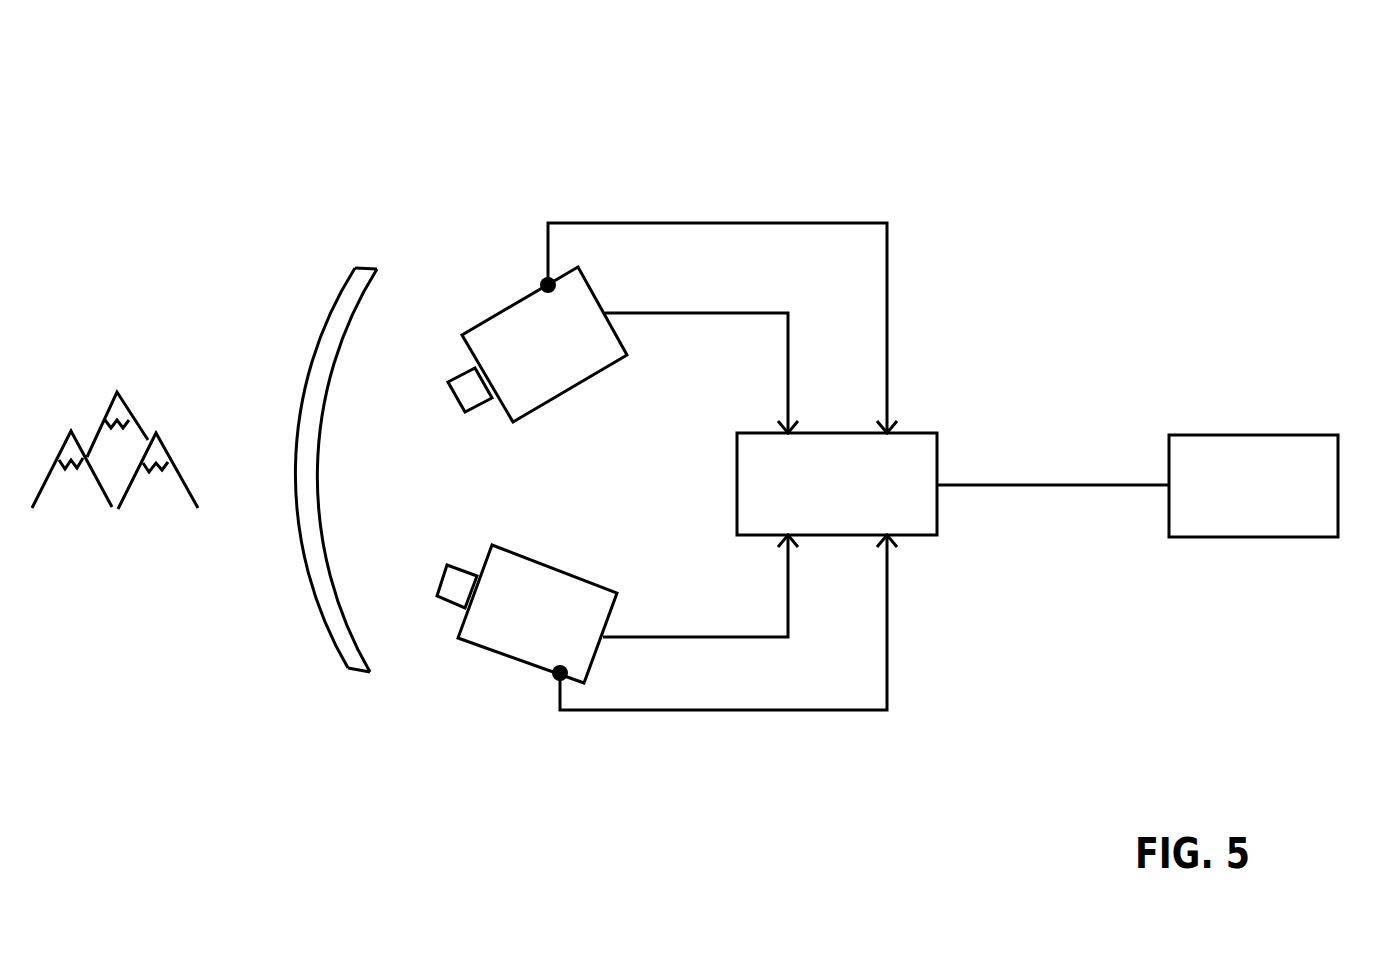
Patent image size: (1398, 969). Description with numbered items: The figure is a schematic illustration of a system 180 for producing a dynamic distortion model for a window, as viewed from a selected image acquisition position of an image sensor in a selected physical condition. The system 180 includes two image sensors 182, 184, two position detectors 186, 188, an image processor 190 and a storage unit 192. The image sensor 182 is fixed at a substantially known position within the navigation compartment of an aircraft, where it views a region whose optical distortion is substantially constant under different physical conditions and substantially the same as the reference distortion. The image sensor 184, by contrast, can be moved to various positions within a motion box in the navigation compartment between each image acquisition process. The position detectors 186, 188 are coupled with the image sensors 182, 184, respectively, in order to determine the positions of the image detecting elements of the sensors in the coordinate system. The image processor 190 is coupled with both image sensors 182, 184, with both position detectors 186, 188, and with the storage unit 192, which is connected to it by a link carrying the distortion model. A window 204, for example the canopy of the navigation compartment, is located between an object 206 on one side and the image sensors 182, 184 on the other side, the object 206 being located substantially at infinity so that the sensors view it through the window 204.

The system 180 is at (705, 112).
The image sensor 182 is at (534, 556).
The image sensor 184 is at (548, 405).
The position detector 186 is at (553, 678).
The position detector 188 is at (545, 280).
The image processor 190 is at (930, 535).
The storage unit 192 is at (1295, 537).
The window 204 is at (360, 266).
The object 206 is at (113, 342).